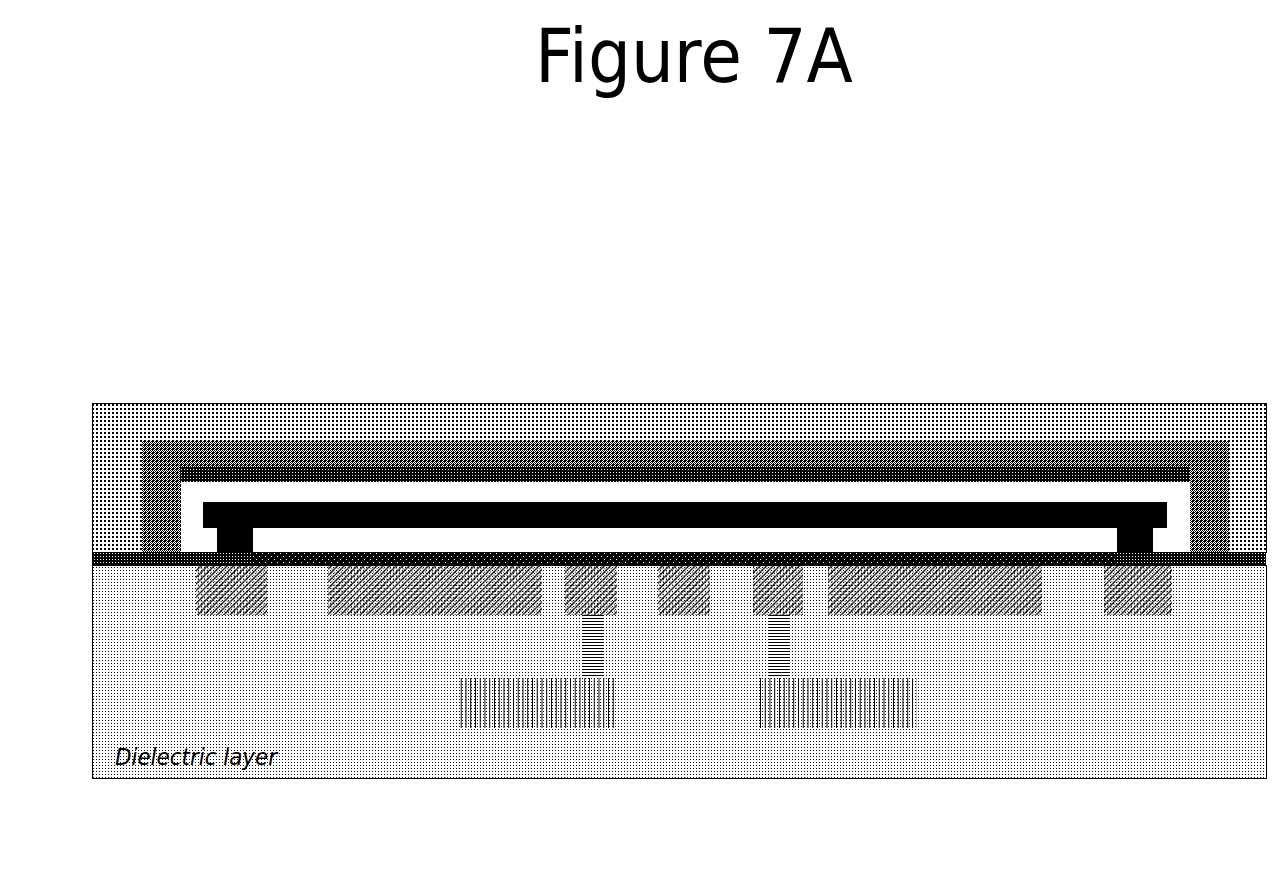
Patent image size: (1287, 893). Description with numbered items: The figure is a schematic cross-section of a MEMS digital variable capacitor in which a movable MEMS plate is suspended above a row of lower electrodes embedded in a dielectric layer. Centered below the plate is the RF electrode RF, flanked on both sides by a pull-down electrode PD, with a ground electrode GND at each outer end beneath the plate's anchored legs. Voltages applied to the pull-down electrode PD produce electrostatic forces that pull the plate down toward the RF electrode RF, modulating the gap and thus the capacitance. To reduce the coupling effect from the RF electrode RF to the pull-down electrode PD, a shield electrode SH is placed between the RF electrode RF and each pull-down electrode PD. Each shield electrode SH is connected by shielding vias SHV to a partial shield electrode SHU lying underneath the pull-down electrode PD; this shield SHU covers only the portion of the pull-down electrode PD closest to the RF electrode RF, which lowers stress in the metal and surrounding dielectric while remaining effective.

The ground electrode GND is at (684, 604).
The pull-down electrode PD is at (685, 604).
The RF electrode RF is at (684, 604).
The shield electrodes SH is at (778, 585).
The shielding vias SHV is at (764, 647).
The partial shield electrode underneath PD electrode SHU is at (842, 703).